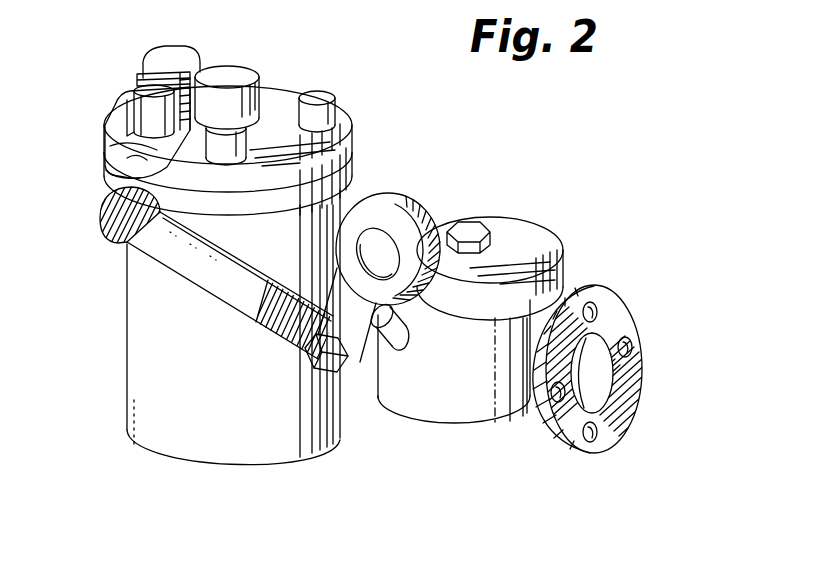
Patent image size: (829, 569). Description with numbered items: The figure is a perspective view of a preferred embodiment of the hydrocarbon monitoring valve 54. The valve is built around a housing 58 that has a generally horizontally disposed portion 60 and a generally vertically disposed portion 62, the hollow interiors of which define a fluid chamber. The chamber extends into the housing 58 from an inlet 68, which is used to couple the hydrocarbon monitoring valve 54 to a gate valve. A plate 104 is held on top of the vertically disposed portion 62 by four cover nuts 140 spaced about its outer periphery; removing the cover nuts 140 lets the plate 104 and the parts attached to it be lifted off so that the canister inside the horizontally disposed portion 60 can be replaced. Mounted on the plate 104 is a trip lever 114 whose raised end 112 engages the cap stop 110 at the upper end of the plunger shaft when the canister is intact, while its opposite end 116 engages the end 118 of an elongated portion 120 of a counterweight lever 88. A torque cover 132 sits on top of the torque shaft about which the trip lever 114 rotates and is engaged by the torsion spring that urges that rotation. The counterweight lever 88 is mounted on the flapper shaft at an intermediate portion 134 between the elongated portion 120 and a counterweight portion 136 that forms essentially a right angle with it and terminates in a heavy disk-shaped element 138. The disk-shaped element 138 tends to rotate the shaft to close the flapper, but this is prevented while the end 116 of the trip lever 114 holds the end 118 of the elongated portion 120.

The hydrocarbon monitoring valve 54 is at (405, 452).
The housing 58 is at (562, 300).
The horizontally disposed portion 60 is at (482, 407).
The vertically disposed portion 62 is at (145, 378).
The inlet 68 is at (597, 372).
The counterweight lever 88 is at (272, 328).
The plate 104 is at (282, 100).
The cap stop 110 is at (238, 73).
The raised end 112 is at (173, 55).
The trip lever 114 is at (133, 152).
The opposite end 116 is at (107, 176).
The end of elongated portion 118 is at (110, 220).
The elongated portion 120 is at (238, 291).
The torque cover 132 is at (152, 82).
The intermediate portion 134 is at (340, 375).
The counterweight portion 136 is at (400, 342).
The disk-shaped element 138 is at (397, 203).
The cover nuts 140 is at (127, 92).